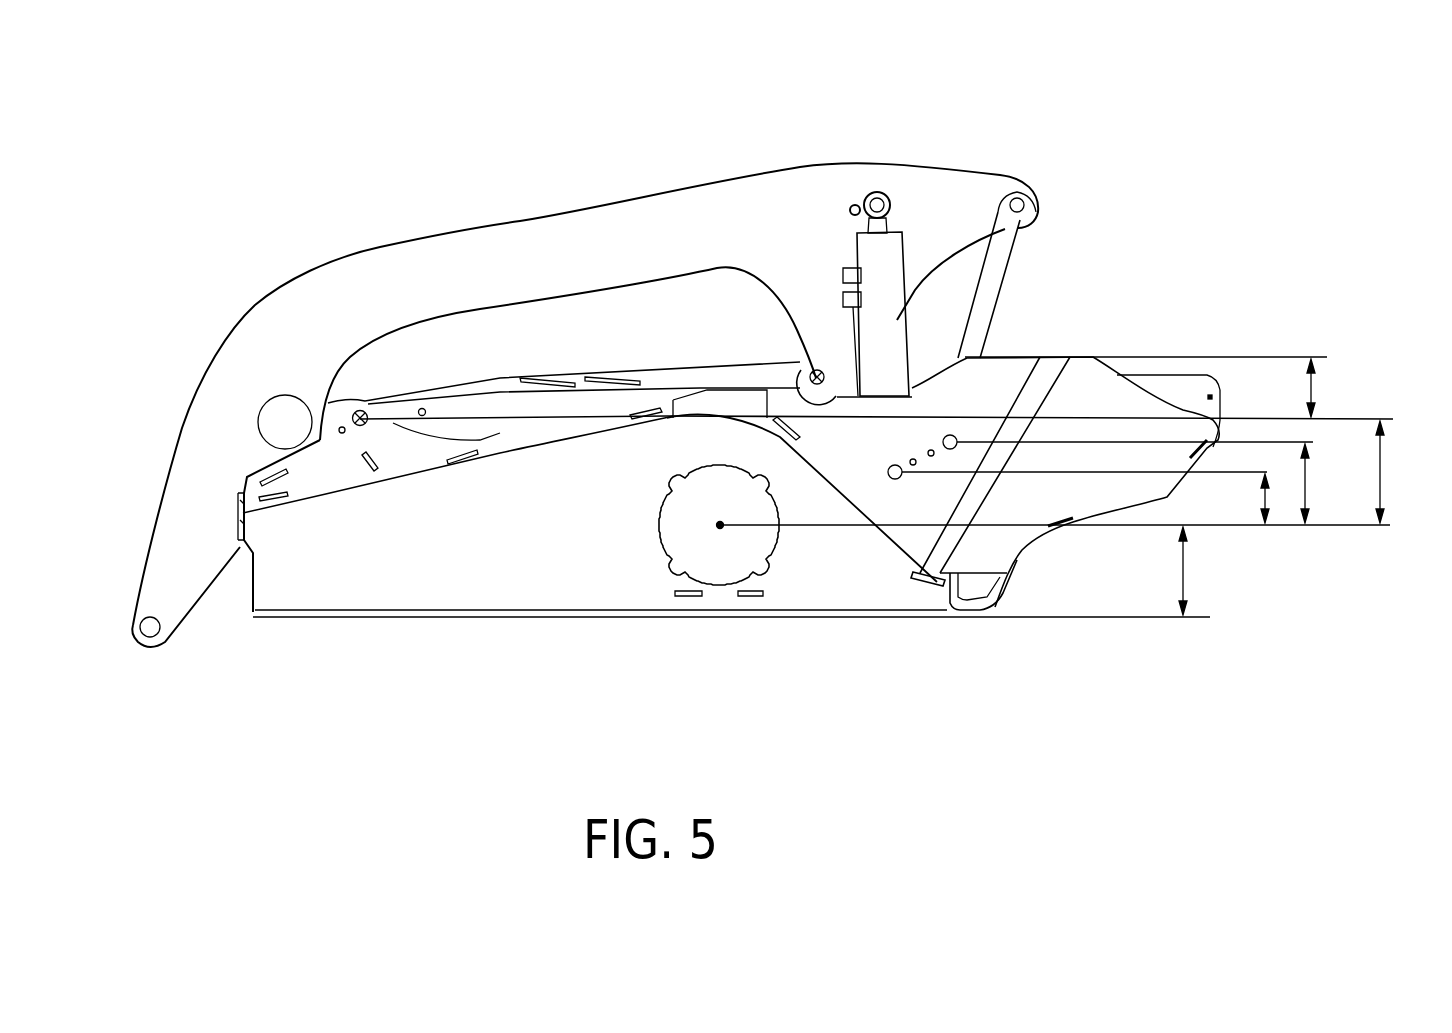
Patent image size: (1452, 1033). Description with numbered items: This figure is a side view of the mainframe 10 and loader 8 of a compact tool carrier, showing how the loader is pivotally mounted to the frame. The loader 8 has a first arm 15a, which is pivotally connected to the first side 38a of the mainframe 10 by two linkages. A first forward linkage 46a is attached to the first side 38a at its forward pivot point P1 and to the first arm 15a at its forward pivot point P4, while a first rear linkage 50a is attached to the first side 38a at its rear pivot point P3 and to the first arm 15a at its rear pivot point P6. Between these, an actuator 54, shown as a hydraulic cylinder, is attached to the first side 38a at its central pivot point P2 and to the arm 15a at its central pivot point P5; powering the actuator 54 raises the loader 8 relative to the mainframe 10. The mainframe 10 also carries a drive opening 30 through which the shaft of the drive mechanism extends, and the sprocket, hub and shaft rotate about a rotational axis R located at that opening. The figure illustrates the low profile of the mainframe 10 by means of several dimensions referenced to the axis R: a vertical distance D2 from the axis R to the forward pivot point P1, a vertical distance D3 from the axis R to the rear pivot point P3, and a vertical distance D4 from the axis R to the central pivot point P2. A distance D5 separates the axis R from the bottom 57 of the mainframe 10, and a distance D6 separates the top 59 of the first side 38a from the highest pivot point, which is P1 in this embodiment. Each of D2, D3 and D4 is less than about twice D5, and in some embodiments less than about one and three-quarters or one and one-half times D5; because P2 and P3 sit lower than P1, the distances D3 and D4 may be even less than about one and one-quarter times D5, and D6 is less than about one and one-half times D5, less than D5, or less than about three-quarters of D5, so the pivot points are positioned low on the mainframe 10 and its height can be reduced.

The loader 8 is at (533, 215).
The first arm 15a is at (438, 253).
The first forward linkage 46a is at (478, 410).
The first side 38a is at (560, 567).
The mainframe 10 is at (503, 620).
The drive opening 30 is at (735, 545).
The rotational axis R is at (727, 526).
The actuator 54 is at (905, 315).
The first rear linkage 50a is at (1013, 264).
The top 59 is at (1083, 357).
The bottom 57 is at (937, 613).
The forward pivot point P1 is at (367, 403).
The central pivot point P2 is at (893, 478).
The rear pivot point P3 is at (957, 440).
The forward pivot point P4 is at (816, 370).
The central pivot point P5 is at (877, 198).
The rear pivot point P6 is at (1020, 198).
The vertical distance D2 is at (1384, 471).
The vertical distance D3 is at (1310, 486).
The vertical distance D4 is at (1264, 499).
The distance D5 is at (1187, 568).
The distance D6 is at (1315, 388).